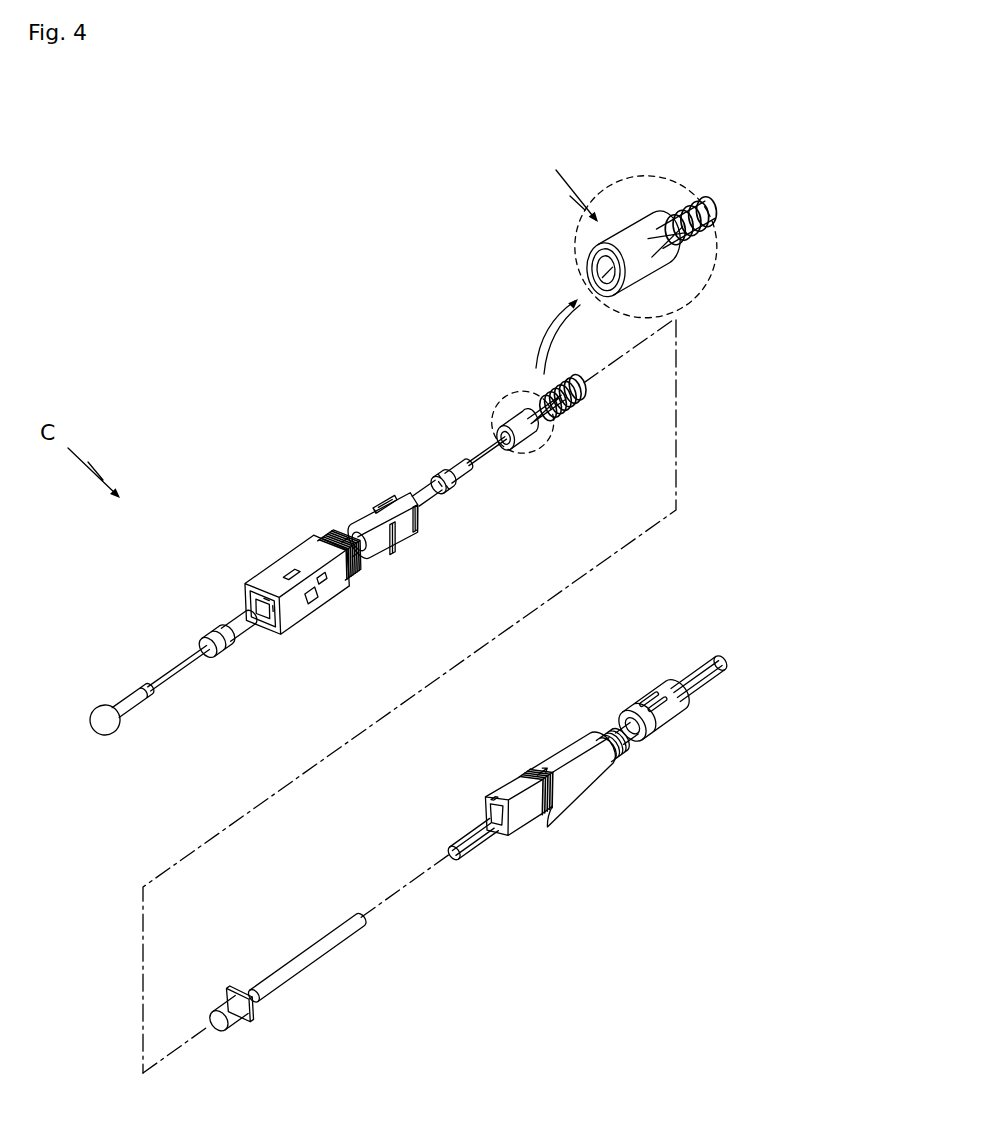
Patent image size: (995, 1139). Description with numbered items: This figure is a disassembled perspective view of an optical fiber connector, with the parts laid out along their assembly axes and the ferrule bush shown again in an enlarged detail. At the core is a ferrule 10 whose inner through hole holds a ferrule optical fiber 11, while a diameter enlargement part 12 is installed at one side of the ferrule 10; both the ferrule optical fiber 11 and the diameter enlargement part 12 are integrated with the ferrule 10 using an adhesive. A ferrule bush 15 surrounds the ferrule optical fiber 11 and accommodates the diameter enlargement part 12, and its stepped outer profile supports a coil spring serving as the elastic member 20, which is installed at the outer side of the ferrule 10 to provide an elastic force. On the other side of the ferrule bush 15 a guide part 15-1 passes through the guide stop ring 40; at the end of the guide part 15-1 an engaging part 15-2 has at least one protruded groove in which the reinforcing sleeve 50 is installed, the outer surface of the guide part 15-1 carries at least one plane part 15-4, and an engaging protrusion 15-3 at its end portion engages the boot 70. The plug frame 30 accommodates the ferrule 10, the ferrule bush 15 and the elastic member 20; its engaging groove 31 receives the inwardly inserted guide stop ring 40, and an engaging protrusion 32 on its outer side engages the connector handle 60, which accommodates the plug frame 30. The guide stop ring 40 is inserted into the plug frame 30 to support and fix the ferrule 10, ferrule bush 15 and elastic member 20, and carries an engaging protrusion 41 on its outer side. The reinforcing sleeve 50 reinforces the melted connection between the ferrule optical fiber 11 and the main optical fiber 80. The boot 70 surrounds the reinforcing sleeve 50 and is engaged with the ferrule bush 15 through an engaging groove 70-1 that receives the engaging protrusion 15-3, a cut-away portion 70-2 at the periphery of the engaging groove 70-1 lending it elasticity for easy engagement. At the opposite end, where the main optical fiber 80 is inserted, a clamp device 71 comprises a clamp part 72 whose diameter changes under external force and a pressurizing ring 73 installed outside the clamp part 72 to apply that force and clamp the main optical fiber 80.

The ferrule 10 is at (430, 485).
The ferrule optical fiber 11 is at (487, 447).
The diameter enlargement part 12 is at (442, 470).
The ferrule bush 15 is at (512, 420).
The guide part 15-1 is at (532, 438).
The engaging part 15-2 is at (562, 413).
The engaging protrusion 15-3 is at (548, 420).
The plane part 15-4 is at (653, 260).
The elastic member 20 is at (542, 378).
The plug frame 30 is at (372, 515).
The engaging groove 31 is at (413, 537).
The engaging protrusion 32 is at (388, 548).
The guide stop ring 40 is at (252, 1008).
The engaging protrusion 41 is at (237, 1020).
The reinforcing sleeve 50 is at (307, 963).
The connector handle 60 is at (270, 577).
The boot 70 is at (562, 807).
The engaging groove 70-1 is at (502, 797).
The cut-away portion 70-2 is at (515, 800).
The clamp device 71 is at (725, 808).
The clamp part 72 is at (621, 748).
The pressurizing ring 73 is at (654, 735).
The main optical fiber 80 is at (473, 855).